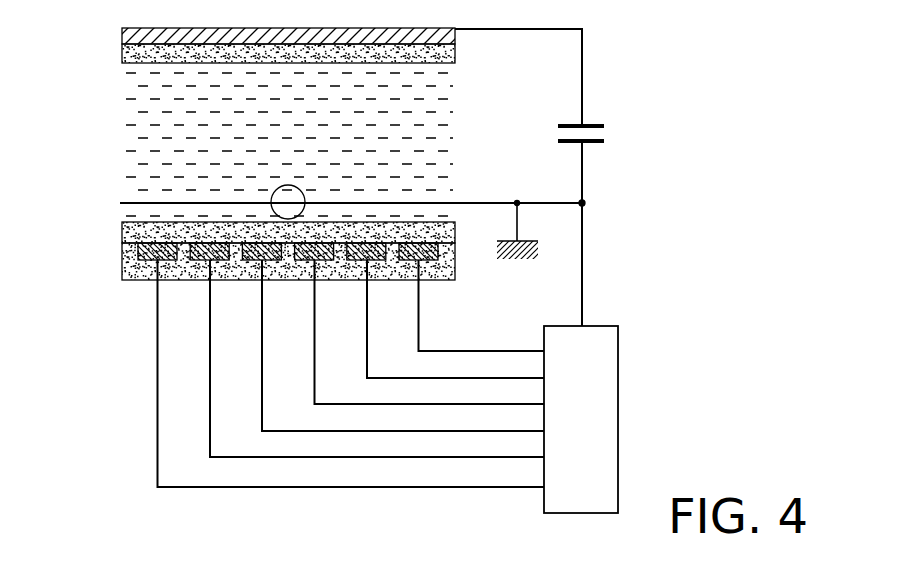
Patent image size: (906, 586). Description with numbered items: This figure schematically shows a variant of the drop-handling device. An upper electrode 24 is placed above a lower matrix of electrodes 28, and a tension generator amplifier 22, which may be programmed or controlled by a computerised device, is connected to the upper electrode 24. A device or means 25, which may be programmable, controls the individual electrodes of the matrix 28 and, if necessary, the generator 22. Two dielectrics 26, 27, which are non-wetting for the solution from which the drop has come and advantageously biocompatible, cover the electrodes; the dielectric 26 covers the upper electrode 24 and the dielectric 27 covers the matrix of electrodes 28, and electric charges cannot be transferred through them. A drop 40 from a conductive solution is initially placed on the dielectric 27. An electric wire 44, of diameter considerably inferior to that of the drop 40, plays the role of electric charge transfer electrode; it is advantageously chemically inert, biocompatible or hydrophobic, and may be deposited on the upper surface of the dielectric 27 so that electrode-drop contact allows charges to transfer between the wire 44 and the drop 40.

The tension generator amplifier 22 is at (598, 124).
The upper electrode 24 is at (121, 34).
The controlling means 25 is at (612, 336).
The dielectric 26 is at (121, 57).
The dielectric 27 is at (121, 229).
The lower matrix of electrodes 28 is at (118, 256).
The drop 40 is at (292, 190).
The electric wire 44 is at (122, 203).